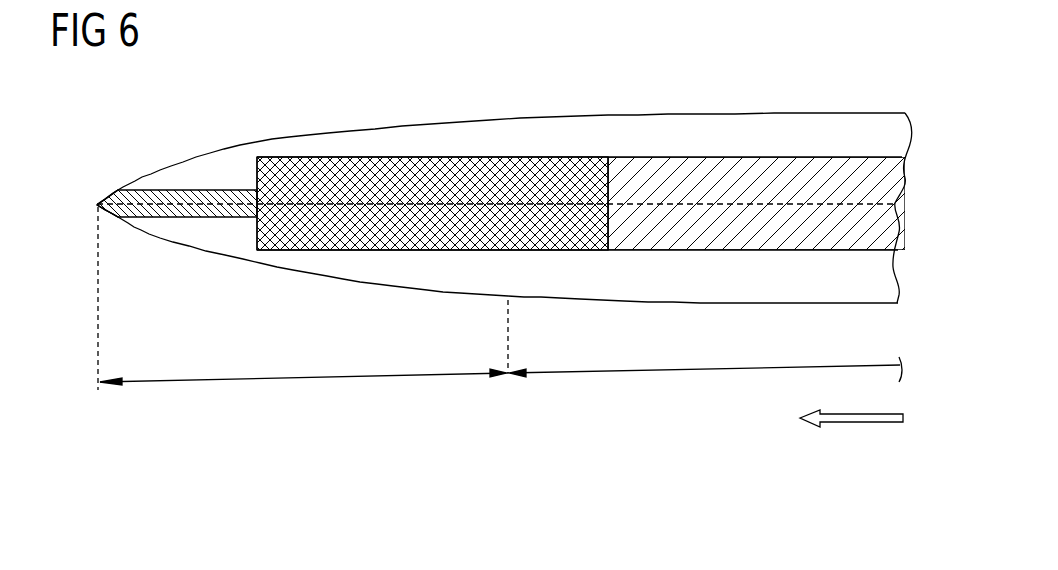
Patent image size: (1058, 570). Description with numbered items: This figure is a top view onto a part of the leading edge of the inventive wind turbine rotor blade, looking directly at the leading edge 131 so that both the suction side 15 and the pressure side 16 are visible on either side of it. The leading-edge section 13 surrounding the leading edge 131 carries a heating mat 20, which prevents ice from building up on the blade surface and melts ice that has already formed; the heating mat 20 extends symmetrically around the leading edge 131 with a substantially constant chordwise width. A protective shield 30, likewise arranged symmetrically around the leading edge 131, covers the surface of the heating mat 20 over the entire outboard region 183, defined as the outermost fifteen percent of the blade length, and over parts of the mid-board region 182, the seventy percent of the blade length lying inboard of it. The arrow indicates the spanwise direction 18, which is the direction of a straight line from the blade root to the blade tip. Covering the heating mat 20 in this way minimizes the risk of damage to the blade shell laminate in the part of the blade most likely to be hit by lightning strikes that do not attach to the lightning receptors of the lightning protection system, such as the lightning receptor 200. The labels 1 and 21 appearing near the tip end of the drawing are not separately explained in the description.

The rotor blade 1 is at (98, 203).
The leading-edge section 13 is at (893, 220).
The leading edge 131 is at (852, 196).
The suction side 15 is at (731, 128).
The pressure side 16 is at (721, 287).
The spanwise direction 18 is at (862, 423).
The mid-board region 182 is at (693, 372).
The outboard region 183 is at (310, 383).
The heating mat 20 is at (655, 186).
The leading edge 21 is at (97, 204).
The protective shield 30 is at (226, 189).
The lightning receptor 200 is at (292, 145).